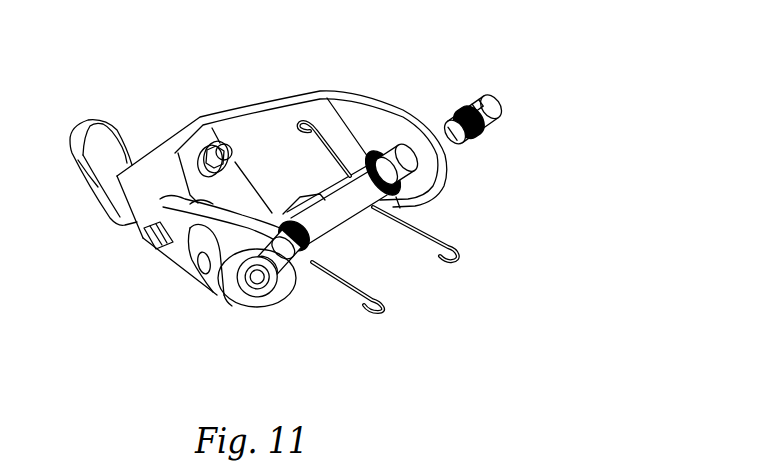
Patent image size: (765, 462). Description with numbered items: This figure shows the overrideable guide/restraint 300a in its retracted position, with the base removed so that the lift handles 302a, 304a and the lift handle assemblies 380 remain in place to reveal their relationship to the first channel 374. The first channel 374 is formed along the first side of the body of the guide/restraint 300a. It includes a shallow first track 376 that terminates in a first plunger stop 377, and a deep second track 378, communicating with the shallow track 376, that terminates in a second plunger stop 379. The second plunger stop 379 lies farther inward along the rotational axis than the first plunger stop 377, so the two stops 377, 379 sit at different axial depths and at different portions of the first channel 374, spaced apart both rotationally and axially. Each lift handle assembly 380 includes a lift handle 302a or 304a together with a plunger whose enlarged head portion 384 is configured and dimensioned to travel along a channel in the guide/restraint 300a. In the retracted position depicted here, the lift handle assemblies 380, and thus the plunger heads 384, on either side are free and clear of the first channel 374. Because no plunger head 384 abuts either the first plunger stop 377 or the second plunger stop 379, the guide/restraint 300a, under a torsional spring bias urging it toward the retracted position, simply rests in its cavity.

The overrideable guide/restraint 300a is at (268, 125).
The lift handle 302a is at (279, 293).
The lift handle 304a is at (505, 98).
The first channel 374 is at (194, 303).
The shallow first track 376 is at (213, 296).
The first plunger stop 377 is at (172, 246).
The deep second track 378 is at (219, 296).
The second plunger stop 379 is at (197, 287).
The lift handle assembly 380 is at (492, 140).
The head portion 384 is at (452, 136).